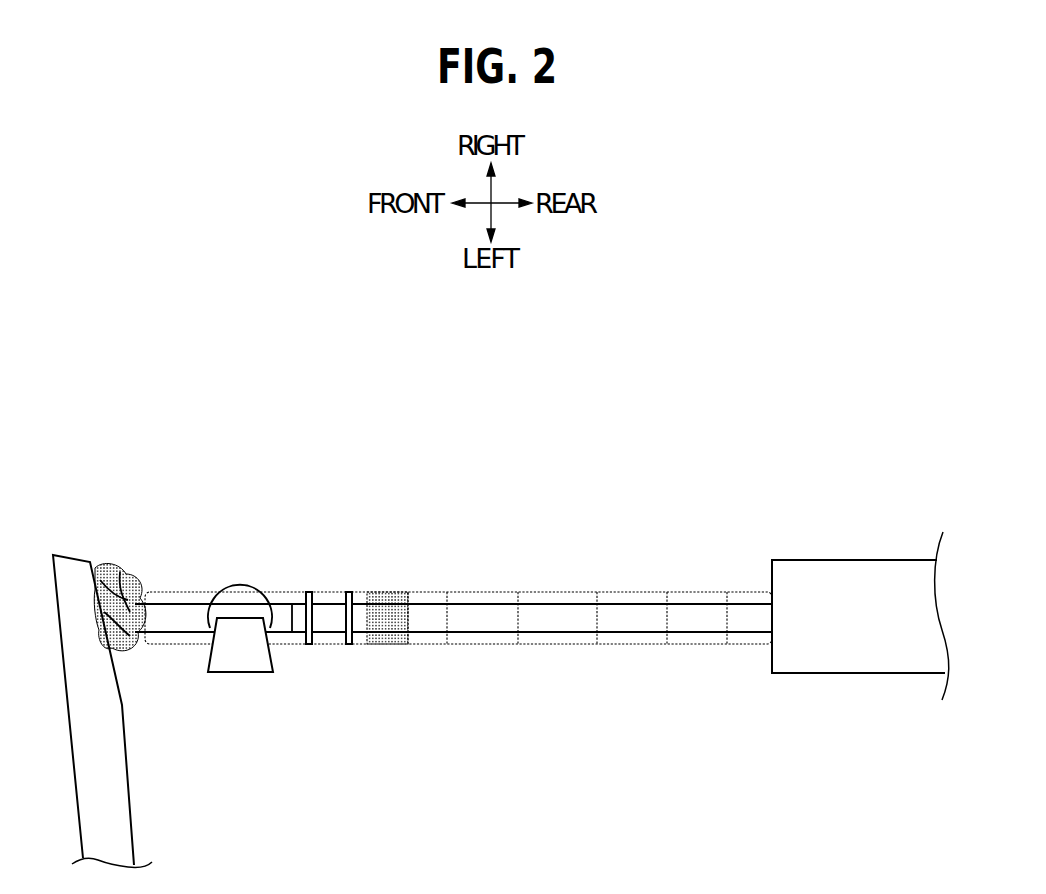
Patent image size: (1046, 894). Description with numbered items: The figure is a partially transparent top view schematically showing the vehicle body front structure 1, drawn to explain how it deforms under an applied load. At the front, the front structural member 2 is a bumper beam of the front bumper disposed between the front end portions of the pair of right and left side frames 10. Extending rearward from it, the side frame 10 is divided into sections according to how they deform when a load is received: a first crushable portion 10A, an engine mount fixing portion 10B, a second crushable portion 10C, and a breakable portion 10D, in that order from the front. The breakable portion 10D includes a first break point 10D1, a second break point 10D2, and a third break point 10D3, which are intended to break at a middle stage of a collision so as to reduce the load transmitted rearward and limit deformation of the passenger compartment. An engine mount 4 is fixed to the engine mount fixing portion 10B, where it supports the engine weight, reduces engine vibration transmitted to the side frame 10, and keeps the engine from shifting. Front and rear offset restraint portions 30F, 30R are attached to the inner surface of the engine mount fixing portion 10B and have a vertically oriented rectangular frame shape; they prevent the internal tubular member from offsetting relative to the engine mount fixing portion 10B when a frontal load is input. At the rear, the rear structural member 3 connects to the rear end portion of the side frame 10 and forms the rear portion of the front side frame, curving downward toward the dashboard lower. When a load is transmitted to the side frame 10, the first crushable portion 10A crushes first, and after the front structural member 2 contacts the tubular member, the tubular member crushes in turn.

The vehicle body front structure 1 is at (283, 399).
The front structural member 2 is at (134, 827).
The rear structural member 3 is at (848, 560).
The engine mount 4 is at (242, 673).
The side frame 10 is at (627, 505).
The first crushable portion 10A is at (142, 558).
The engine mount fixing portion 10B is at (271, 636).
The second crushable portion 10C is at (408, 590).
The breakable portion 10D is at (583, 621).
The first break point 10D1 is at (448, 648).
The second break point 10D2 is at (597, 648).
The third break point 10D3 is at (703, 647).
The front offset restraint portion 30F is at (308, 644).
The rear offset restraint portion 30R is at (349, 644).